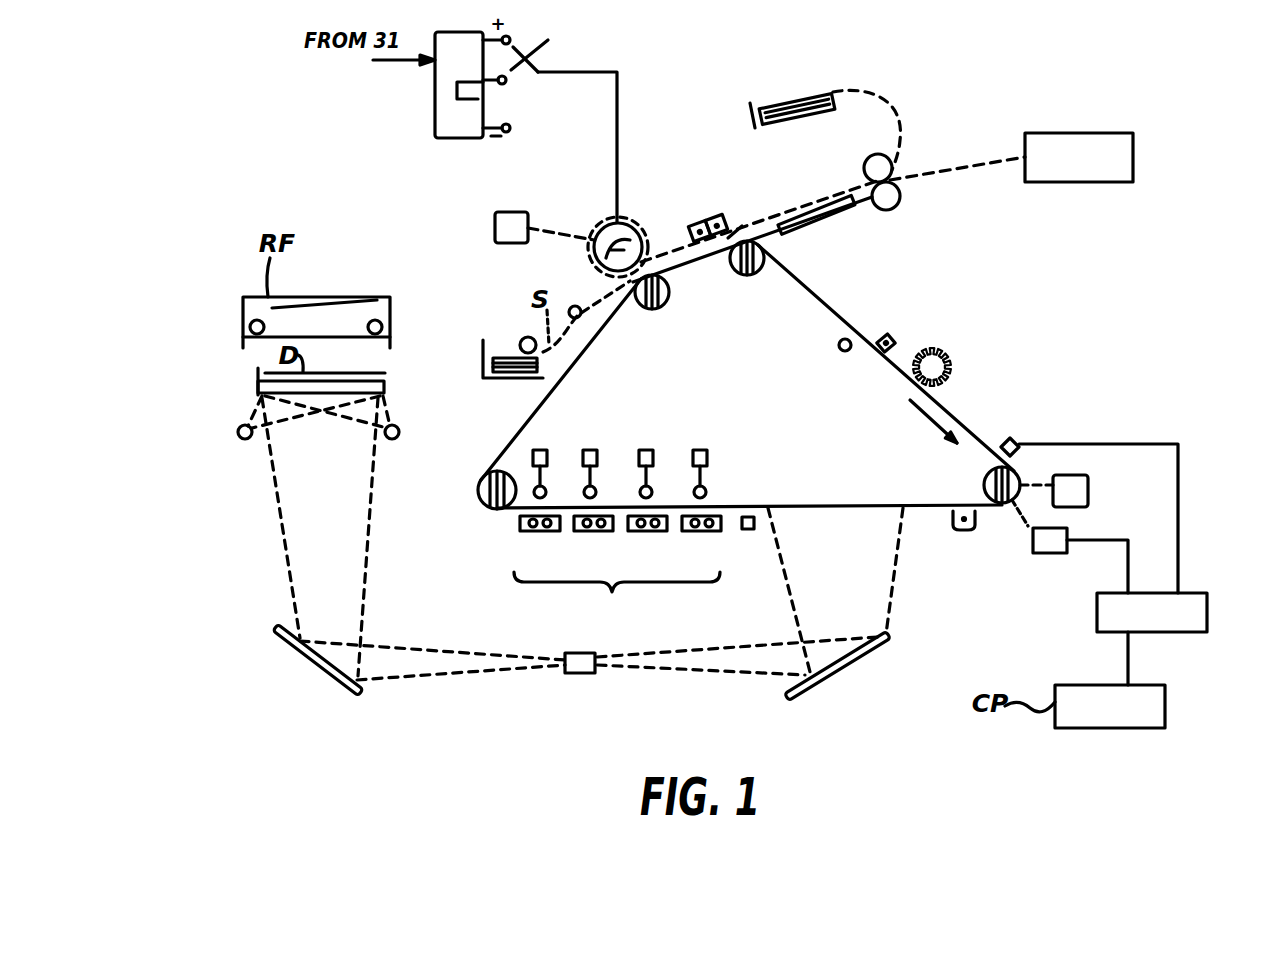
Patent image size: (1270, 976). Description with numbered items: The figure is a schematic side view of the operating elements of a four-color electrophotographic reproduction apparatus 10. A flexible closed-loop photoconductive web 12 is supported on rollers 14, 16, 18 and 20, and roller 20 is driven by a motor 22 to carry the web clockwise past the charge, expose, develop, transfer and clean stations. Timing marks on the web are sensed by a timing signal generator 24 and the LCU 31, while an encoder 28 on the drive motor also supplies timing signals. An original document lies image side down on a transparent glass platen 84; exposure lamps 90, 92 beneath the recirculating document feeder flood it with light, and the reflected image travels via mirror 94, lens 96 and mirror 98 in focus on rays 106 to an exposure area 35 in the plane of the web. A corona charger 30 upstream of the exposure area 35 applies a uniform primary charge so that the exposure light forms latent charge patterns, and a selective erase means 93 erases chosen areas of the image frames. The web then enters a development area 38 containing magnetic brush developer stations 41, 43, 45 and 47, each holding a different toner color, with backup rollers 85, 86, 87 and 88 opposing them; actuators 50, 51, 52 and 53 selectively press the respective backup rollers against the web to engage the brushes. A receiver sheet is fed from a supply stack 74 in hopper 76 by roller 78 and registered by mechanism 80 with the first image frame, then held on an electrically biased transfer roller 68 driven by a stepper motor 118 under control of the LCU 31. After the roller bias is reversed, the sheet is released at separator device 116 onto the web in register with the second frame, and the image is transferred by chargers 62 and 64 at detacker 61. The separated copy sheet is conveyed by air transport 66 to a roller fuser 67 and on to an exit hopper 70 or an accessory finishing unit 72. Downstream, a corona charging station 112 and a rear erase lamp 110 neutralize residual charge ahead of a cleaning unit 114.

The reproduction apparatus 10 is at (972, 330).
The photoconductive web 12 is at (845, 318).
The roller 14 is at (748, 276).
The roller 16 is at (653, 310).
The roller 18 is at (480, 502).
The roller 20 is at (985, 480).
The motor 22 is at (1092, 492).
The timing signal generator 24 is at (1013, 437).
The encoder 28 is at (1033, 553).
The corona charger 30 is at (962, 532).
The LCU 31 is at (1207, 594).
The exposure area 35 is at (848, 518).
The development area 38 is at (617, 600).
The developer station 41 is at (545, 532).
The developer station 43 is at (598, 532).
The developer station 45 is at (652, 532).
The developer station 47 is at (706, 532).
The actuator 50 is at (542, 449).
The actuator 51 is at (592, 449).
The actuator 52 is at (648, 449).
The actuator 53 is at (702, 449).
The detacker 61 is at (722, 212).
The charger 62 is at (692, 215).
The charger 64 is at (738, 222).
The air transport 66 is at (835, 212).
The roller fuser 67 is at (905, 203).
The transfer roller 68 is at (605, 225).
The exit hopper 70 is at (752, 115).
The accessory finishing unit 72 is at (1073, 133).
The supply stack 74 is at (500, 357).
The hopper 76 is at (483, 362).
The roller 78 is at (520, 338).
The registration mechanism 80 is at (572, 305).
The platen 84 is at (385, 386).
The backup roller 85 is at (546, 495).
The backup roller 86 is at (596, 495).
The backup roller 87 is at (652, 495).
The backup roller 88 is at (706, 495).
The exposure lamp 90 is at (400, 438).
The exposure lamp 92 is at (242, 445).
The selective erase means 93 is at (758, 524).
The mirror 94 is at (335, 680).
The lens 96 is at (566, 673).
The mirror 98 is at (857, 672).
The rays 106 is at (405, 650).
The rear erase lamp 110 is at (838, 351).
The corona charging station 112 is at (895, 333).
The cleaning unit 114 is at (950, 370).
The separator device 116 is at (662, 250).
The stepper motor 118 is at (495, 222).